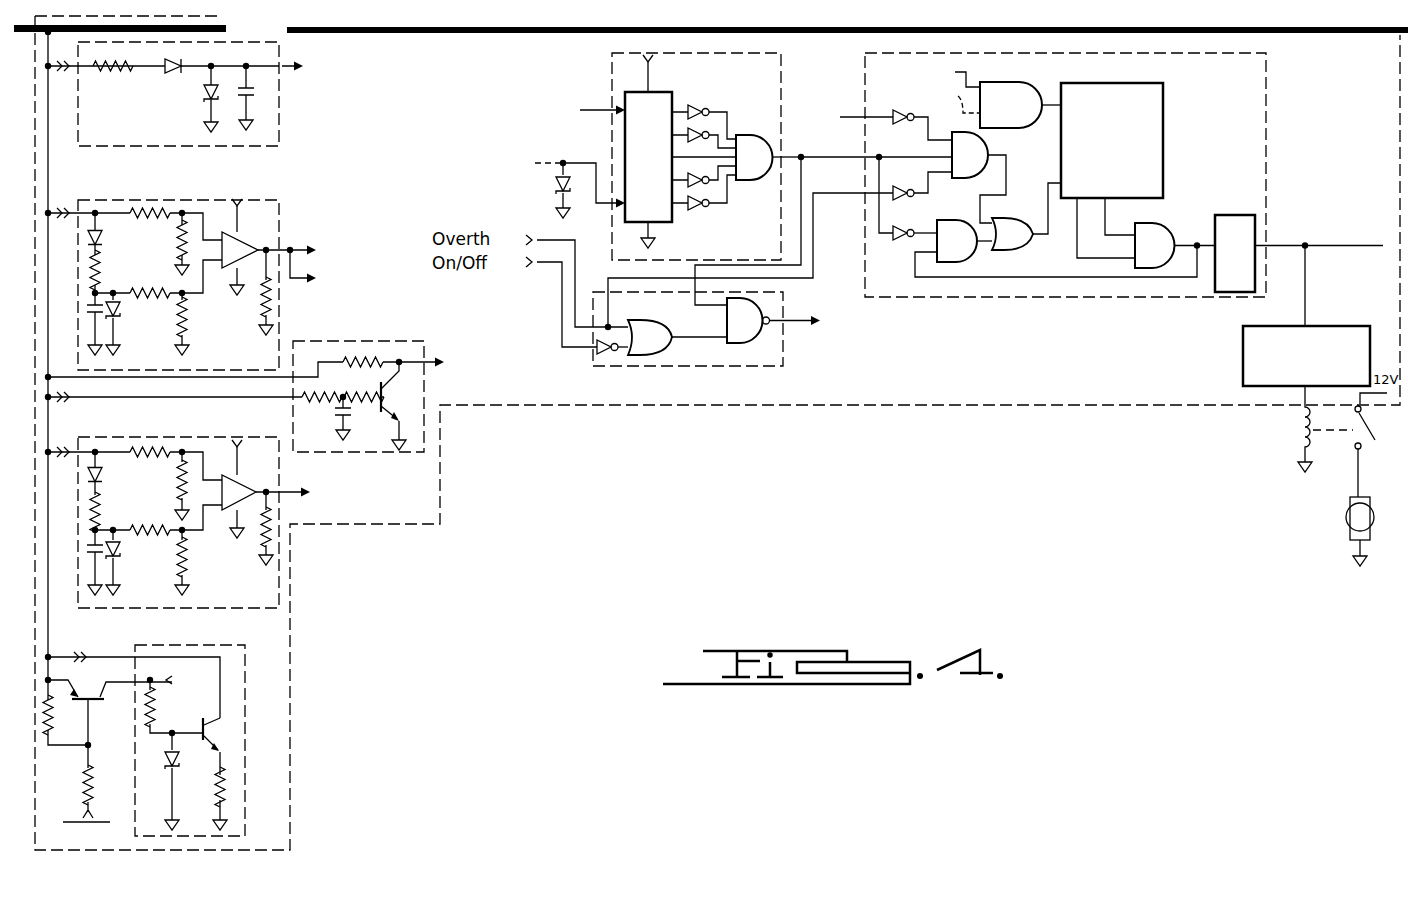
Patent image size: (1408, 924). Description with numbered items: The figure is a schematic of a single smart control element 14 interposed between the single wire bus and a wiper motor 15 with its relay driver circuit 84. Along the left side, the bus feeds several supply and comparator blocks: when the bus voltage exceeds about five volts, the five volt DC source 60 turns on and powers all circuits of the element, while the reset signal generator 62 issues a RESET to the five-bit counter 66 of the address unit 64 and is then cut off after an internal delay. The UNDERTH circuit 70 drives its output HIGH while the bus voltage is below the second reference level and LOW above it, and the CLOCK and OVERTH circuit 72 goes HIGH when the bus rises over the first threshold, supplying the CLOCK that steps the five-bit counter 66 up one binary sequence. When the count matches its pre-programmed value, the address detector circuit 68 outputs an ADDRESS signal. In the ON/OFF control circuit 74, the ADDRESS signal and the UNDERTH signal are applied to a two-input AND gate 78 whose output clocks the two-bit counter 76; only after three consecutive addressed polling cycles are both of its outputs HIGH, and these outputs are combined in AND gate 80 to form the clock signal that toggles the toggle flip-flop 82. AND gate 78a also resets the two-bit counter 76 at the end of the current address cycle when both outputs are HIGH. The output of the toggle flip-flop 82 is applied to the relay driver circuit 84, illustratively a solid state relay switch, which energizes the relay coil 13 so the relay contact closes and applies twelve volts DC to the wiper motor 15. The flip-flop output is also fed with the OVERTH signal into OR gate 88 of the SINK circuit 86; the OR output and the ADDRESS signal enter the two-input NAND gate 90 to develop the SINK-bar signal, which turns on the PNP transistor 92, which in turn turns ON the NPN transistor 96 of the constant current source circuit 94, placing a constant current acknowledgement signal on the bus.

The relay coil 13 is at (1295, 423).
The smart control element 14 is at (846, 80).
The wiper motor 15 is at (1346, 525).
The 5 VDC source 60 is at (282, 114).
The reset signal generator 62 is at (414, 341).
The address unit 64 is at (641, 150).
The 5-bit counter 66 is at (673, 97).
The address detector circuit 68 is at (752, 175).
The UNDERTH circuit 70 is at (140, 437).
The CLOCK and OVERTH circuit 72 is at (280, 208).
The ON/OFF control circuit 74 is at (1086, 189).
The 2-bit counter 76 is at (1163, 138).
The 2-input AND gate 78 is at (978, 148).
The AND gate 78a is at (1020, 92).
The AND gate 80 is at (1160, 262).
The toggle flip-flop 82 is at (1232, 215).
The relay driver circuit 84 is at (1345, 333).
The SINK circuit 86 is at (720, 339).
The OR gate 88 is at (662, 346).
The 2-input NAND gate 90 is at (760, 313).
The PNP transistor 92 is at (98, 702).
The constant current source circuit 94 is at (190, 729).
The NPN transistor 96 is at (204, 723).